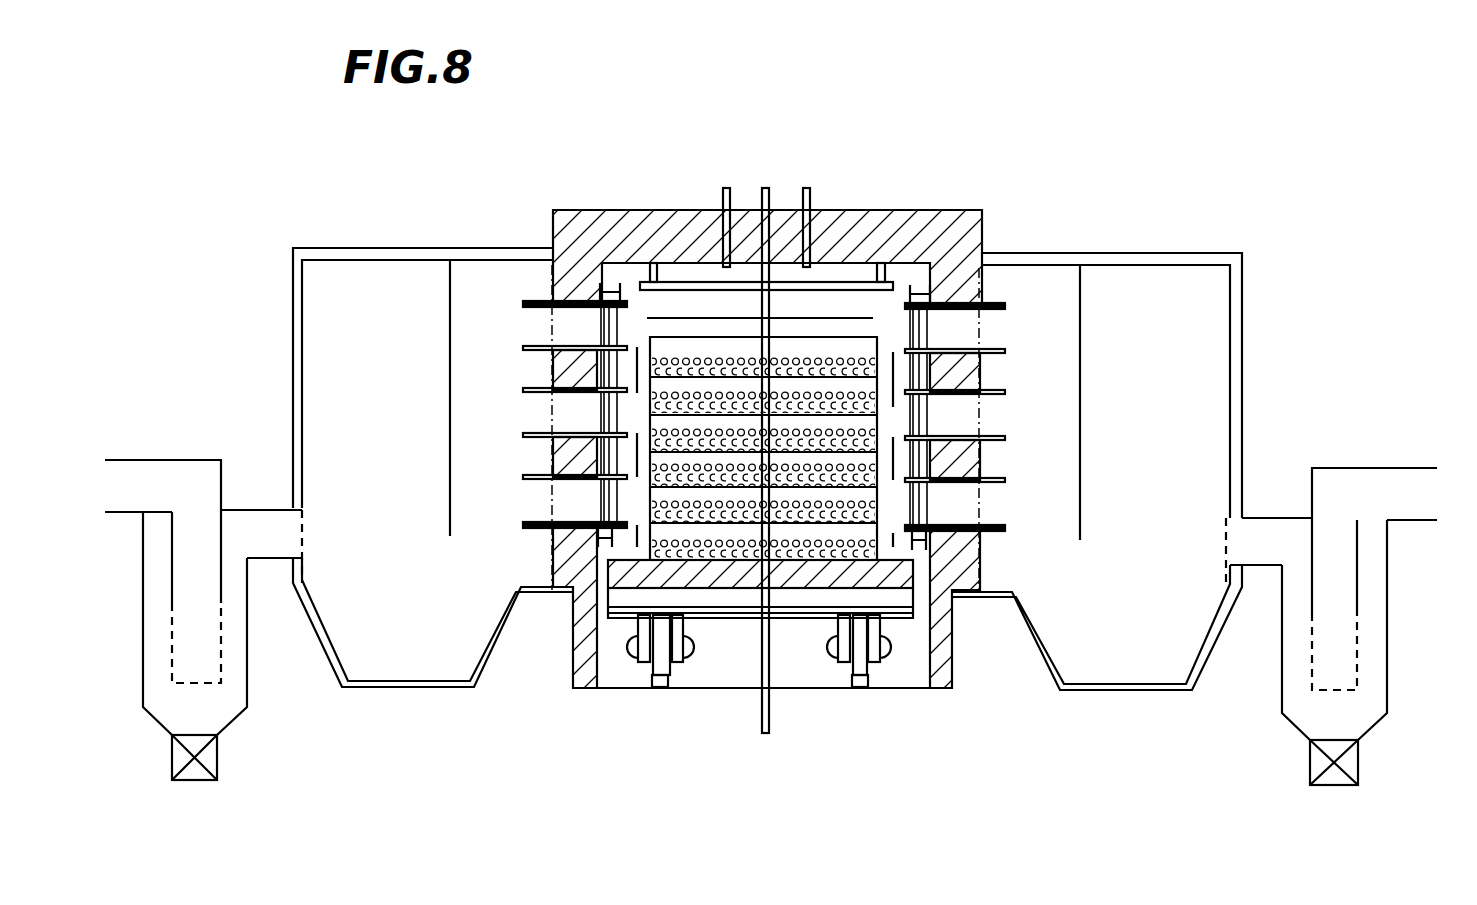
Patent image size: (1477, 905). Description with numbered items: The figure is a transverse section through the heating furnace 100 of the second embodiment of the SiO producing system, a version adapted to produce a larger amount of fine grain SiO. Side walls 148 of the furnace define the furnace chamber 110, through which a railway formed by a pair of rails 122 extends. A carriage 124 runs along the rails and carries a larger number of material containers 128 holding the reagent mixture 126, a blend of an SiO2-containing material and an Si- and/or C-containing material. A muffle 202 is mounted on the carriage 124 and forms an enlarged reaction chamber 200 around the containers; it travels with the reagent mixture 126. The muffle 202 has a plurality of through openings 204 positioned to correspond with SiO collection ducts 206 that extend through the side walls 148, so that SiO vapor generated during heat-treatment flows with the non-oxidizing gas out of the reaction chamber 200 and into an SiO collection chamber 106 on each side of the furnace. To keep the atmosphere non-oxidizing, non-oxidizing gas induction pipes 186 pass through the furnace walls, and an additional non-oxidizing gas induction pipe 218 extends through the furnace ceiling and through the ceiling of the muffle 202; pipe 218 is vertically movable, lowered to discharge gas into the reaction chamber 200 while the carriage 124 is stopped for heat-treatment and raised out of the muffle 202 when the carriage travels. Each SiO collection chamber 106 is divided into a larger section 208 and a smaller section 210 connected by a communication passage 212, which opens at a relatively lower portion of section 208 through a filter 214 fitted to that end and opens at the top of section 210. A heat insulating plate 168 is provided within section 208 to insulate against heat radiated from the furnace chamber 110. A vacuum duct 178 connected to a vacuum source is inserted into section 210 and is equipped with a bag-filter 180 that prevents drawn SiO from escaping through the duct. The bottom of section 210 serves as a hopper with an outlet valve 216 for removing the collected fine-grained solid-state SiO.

The heating furnace 100 is at (880, 200).
The SiO collection chamber 106 is at (789, 447).
The furnace chamber 110 is at (688, 300).
The rails 122 is at (657, 688).
The carriage 124 is at (738, 615).
The reagent mixture 126 is at (830, 355).
The material container 128 is at (875, 345).
The side walls 148 is at (580, 635).
The heat insulator plate 168 is at (448, 410).
The vacuum duct 178 is at (137, 472).
The bag-filter 180 is at (220, 630).
The non-oxidizing gas induction pipe 186 is at (726, 188).
The reaction chamber 200 is at (885, 352).
The muffle 202 is at (652, 316).
The through openings 204 is at (637, 347).
The SiO collection ducts 206 is at (553, 300).
The section 208 is at (373, 288).
The section 210 is at (160, 573).
The communication passage 212 is at (260, 520).
The filter 214 is at (305, 540).
The outlet valve 216 is at (200, 780).
The additional non-oxidizing gas induction pipe 218 is at (766, 188).